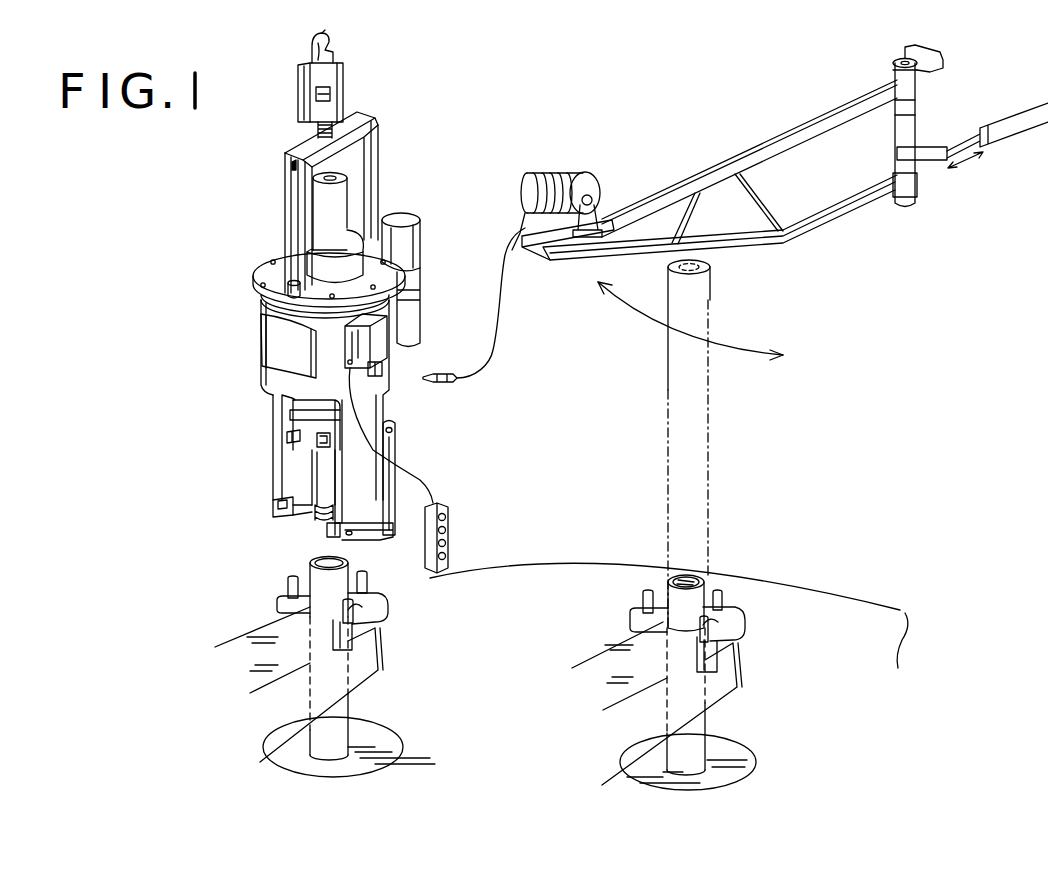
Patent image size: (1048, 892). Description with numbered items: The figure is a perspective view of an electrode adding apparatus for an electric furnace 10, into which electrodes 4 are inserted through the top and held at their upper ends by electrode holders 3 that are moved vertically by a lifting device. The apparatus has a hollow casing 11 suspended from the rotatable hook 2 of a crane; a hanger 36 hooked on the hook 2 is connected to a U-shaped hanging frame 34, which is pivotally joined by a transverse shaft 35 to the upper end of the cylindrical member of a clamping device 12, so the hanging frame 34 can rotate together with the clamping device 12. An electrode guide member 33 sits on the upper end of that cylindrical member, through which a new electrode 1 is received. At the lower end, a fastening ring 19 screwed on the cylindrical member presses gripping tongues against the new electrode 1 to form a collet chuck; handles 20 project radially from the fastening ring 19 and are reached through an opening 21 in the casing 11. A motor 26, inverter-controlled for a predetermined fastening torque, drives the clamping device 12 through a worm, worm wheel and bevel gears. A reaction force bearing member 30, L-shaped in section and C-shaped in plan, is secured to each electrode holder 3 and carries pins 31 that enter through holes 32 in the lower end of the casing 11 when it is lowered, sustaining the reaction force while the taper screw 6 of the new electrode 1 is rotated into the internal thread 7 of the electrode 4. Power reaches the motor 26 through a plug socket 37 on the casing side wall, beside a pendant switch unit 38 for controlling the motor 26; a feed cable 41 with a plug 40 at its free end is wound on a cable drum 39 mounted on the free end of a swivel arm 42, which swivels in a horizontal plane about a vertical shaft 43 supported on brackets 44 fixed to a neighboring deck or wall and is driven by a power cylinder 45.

The new electrode 1 is at (333, 208).
The hook 2 is at (330, 42).
The electrode holder 3 is at (240, 647).
The electrode 4 is at (333, 727).
The taper screw 6 is at (275, 510).
The internal thread 7 is at (327, 556).
The electric furnace 10 is at (885, 628).
The casing 11 is at (383, 307).
The clamping device 12 is at (300, 405).
The fastening ring 19 is at (290, 430).
The handles 20 is at (300, 450).
The opening 21 is at (292, 467).
The motor 26 is at (410, 250).
The reaction force bearing member 30 is at (373, 628).
The pins 31 is at (288, 586).
The through holes 32 is at (292, 497).
The electrode guide member 33 is at (312, 266).
The U-shaped hanging frame 34 is at (292, 208).
The transverse shaft 35 is at (296, 291).
The hanger 36 is at (300, 111).
The plug socket 37 is at (383, 364).
The pendant switch unit 38 is at (450, 533).
The cable drum 39 is at (592, 177).
The plug 40 is at (440, 383).
The feed cable 41 is at (494, 365).
The swivel arm 42 is at (745, 240).
The vertical shaft 43 is at (893, 62).
The brackets 44 is at (940, 56).
The power cylinder 45 is at (1010, 130).